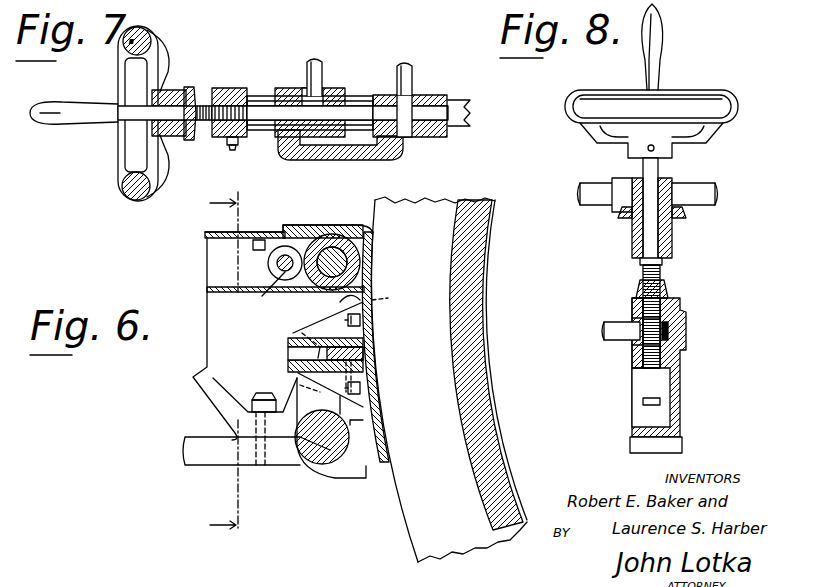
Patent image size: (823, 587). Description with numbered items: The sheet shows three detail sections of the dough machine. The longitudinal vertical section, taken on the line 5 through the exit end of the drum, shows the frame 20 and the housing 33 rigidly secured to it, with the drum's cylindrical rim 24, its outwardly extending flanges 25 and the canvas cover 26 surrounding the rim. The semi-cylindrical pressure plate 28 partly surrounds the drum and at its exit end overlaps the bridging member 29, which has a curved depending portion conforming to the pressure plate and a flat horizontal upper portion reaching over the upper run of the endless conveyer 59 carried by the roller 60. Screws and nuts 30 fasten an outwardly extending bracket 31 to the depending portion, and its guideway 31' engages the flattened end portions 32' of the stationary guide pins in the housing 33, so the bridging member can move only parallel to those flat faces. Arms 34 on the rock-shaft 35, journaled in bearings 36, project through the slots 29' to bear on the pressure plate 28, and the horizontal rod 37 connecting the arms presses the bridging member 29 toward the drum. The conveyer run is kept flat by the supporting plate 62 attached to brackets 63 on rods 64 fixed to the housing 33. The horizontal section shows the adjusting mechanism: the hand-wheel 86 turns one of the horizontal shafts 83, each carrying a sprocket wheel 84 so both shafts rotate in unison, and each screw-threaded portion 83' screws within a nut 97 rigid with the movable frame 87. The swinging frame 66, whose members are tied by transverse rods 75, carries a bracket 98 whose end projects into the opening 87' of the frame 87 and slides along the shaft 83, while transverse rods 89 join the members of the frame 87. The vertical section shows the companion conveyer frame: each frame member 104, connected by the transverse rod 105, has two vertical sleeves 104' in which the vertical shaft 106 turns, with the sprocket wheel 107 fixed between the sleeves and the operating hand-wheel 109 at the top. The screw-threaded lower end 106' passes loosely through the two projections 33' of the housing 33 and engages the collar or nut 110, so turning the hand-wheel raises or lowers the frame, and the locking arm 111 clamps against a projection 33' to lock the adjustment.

In FIG. 6, the section line 5— 5 is at (232, 368).
In FIG. 6, the frame 20 is at (192, 462).
In FIG. 6, the cylindrical rim 24 is at (481, 344).
In FIG. 6, the flanges 25 is at (436, 213).
In FIG. 6, the cover 26 is at (466, 452).
In FIG. 6, the pressure plate 28 is at (416, 532).
In FIG. 6, the bridging member 29 is at (449, 379).
In FIG. 6, the slots 29' is at (399, 291).
In FIG. 6, the screws and nuts 30 is at (370, 318).
In FIG. 6, the bracket 31 is at (312, 340).
In FIG. 6, the guideway 31' is at (263, 351).
In FIG. 6, the flattened end portions 32' is at (375, 349).
In FIG. 8, the housing 33 is at (676, 375).
In FIG. 6, the housing 33 is at (279, 345).
In FIG. 8, the projections 33' is at (612, 329).
In FIG. 6, the arms 34 is at (300, 386).
In FIG. 6, the rock-shaft 35 is at (334, 448).
In FIG. 6, the bearings 36 is at (300, 462).
In FIG. 6, the horizontal rod 37 is at (342, 302).
In FIG. 6, the endless conveyer 59 is at (251, 240).
In FIG. 6, the roller 60 is at (340, 262).
In FIG. 6, the supporting plate 62 is at (205, 236).
In FIG. 6, the brackets 63 is at (268, 255).
In FIG. 6, the rods 64 is at (266, 292).
In FIG. 7, the swinging frame 66 is at (407, 100).
In FIG. 7, the transverse rods 75 is at (409, 70).
In FIG. 7, the horizontal shafts 83 is at (294, 92).
In FIG. 7, the screw-threaded portion 83' is at (200, 142).
In FIG. 7, the sprocket wheel 84 is at (192, 86).
In FIG. 7, the hand-wheel 86 is at (128, 155).
In FIG. 7, the frame 87 is at (282, 100).
In FIG. 7, the opening 87' is at (310, 96).
In FIG. 7, the transverse rods 89 is at (313, 60).
In FIG. 7, the nut 97 is at (241, 146).
In FIG. 7, the bracket 98 is at (348, 161).
In FIG. 8, the frame members 104 is at (671, 228).
In FIG. 8, the vertical sleeves 104' is at (652, 207).
In FIG. 8, the transverse rod 105 is at (590, 186).
In FIG. 8, the vertical shaft 106 is at (620, 264).
In FIG. 8, the screw-threaded lower end 106' is at (620, 393).
In FIG. 8, the sprocket wheel 107 is at (684, 210).
In FIG. 8, the operating hand-wheel 109 is at (700, 94).
In FIG. 8, the collar or nut 110 is at (688, 332).
In FIG. 8, the locking arm 111 is at (668, 292).